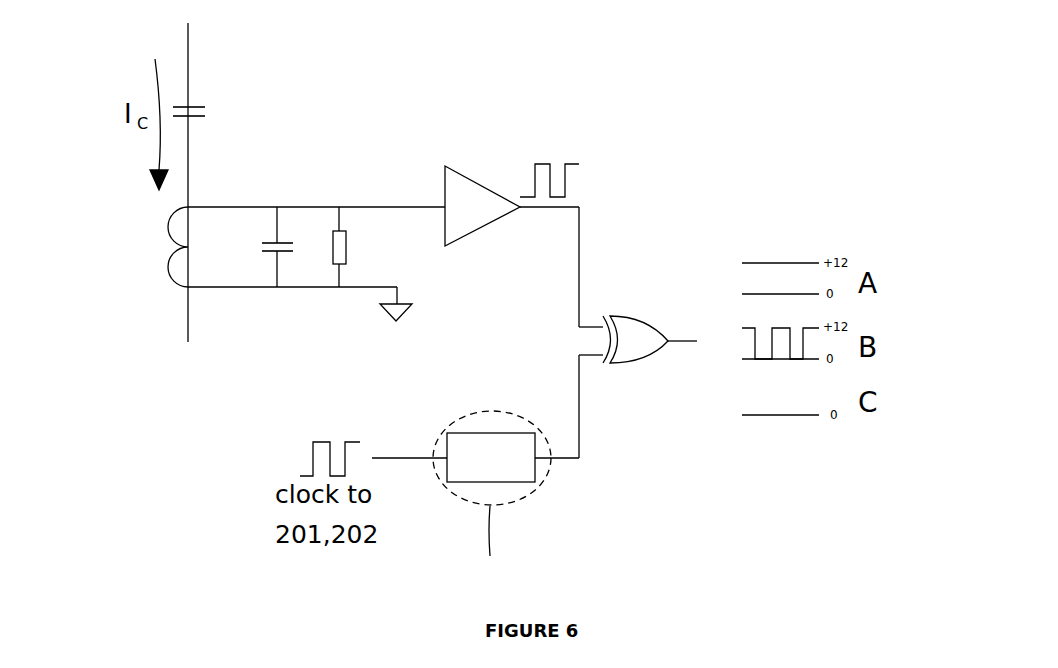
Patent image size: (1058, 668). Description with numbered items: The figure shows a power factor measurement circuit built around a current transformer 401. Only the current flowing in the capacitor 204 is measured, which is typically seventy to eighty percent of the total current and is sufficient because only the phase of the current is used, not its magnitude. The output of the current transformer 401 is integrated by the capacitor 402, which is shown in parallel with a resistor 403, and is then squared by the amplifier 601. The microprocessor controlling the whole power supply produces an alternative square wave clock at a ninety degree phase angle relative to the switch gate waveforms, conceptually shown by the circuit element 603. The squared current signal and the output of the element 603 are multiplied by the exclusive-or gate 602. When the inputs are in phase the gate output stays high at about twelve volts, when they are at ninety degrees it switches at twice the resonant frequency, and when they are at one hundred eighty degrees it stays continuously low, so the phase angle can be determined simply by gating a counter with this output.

The capacitor 204 is at (215, 115).
The current transformer 401 is at (153, 247).
The capacitor 402 is at (275, 227).
The resistor 403 is at (341, 227).
The amplifier 601 is at (512, 233).
The exclusive or gate 602 is at (638, 369).
The circuit element 603 is at (475, 480).